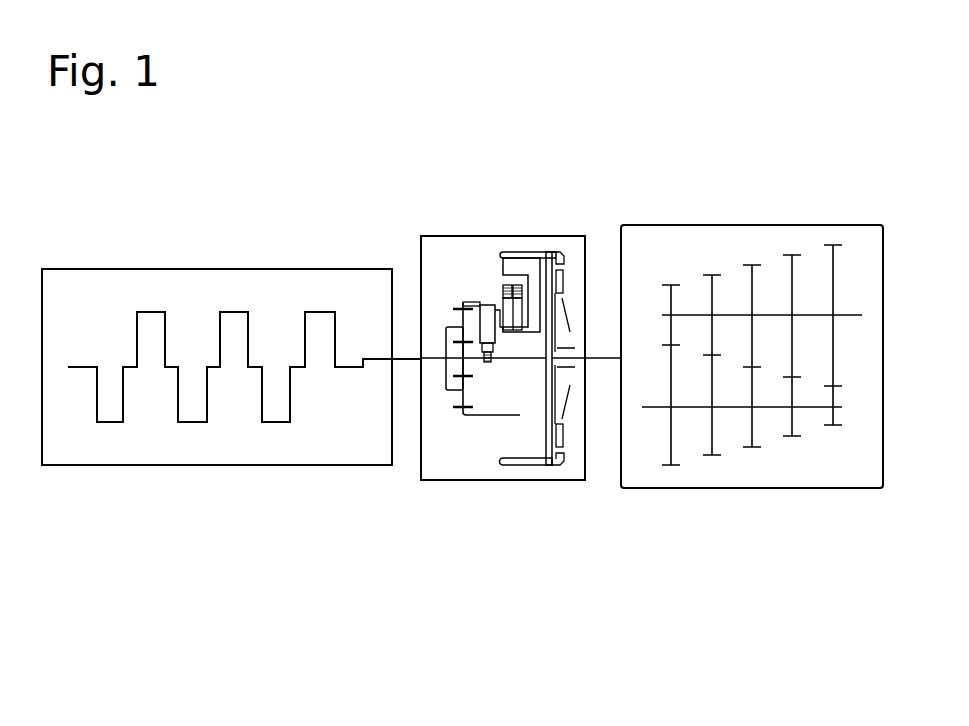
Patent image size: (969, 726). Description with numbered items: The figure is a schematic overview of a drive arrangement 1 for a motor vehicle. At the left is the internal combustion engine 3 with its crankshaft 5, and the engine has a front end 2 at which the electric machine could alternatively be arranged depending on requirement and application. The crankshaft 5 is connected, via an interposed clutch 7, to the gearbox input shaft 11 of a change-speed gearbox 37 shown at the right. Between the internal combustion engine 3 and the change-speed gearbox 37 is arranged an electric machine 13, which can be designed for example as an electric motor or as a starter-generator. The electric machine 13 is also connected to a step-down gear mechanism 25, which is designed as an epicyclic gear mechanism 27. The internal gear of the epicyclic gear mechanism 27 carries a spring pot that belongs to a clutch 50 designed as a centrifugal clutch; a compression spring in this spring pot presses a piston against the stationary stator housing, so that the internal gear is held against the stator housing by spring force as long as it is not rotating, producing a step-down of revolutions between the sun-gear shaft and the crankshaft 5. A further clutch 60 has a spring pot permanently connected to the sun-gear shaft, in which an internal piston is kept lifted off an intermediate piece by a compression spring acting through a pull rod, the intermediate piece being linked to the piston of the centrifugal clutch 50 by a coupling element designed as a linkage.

The drive arrangement 1 is at (432, 612).
The front end 2 is at (42, 450).
The internal combustion engine 3 is at (217, 269).
The crankshaft 5 is at (177, 410).
The clutch 7 is at (563, 263).
The gearbox input shaft 11 is at (604, 358).
The electric machine 13 is at (520, 240).
The step-down gear mechanism 25 is at (485, 424).
The epicyclic gear mechanism 27 is at (450, 395).
The change-speed gearbox 37 is at (775, 225).
The clutch 50 is at (503, 292).
The clutch 60 is at (473, 305).